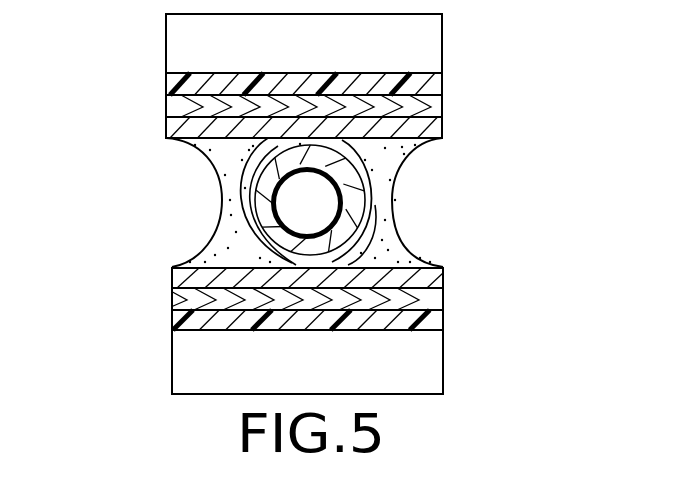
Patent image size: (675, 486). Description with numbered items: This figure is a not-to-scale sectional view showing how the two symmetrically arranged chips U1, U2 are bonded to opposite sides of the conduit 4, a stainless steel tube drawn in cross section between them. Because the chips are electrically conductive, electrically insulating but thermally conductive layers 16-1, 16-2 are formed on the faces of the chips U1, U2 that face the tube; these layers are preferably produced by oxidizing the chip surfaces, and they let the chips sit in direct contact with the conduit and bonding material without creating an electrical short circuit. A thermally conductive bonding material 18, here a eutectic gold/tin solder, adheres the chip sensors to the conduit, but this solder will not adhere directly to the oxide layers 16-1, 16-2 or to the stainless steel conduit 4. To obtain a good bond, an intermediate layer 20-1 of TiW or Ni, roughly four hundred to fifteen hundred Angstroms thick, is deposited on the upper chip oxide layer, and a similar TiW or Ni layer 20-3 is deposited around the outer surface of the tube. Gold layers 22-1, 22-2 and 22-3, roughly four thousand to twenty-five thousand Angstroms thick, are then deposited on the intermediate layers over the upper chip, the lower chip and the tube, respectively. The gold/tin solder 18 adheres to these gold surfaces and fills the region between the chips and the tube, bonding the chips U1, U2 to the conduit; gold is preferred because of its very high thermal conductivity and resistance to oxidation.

The chip U1 is at (166, 45).
The chip U2 is at (172, 367).
The electrically insulating layer 16-1 is at (442, 85).
The electrically insulating layer 16-2 is at (443, 317).
The TiW or Ni layer 20-1 is at (166, 110).
The gold layer 22-1 is at (442, 127).
The gold layer 22-2 is at (443, 273).
The TiW or Ni layer 20-3 is at (248, 171).
The gold layer 22-3 is at (237, 208).
The conduit 4 is at (413, 158).
The bonding material 18 is at (400, 230).